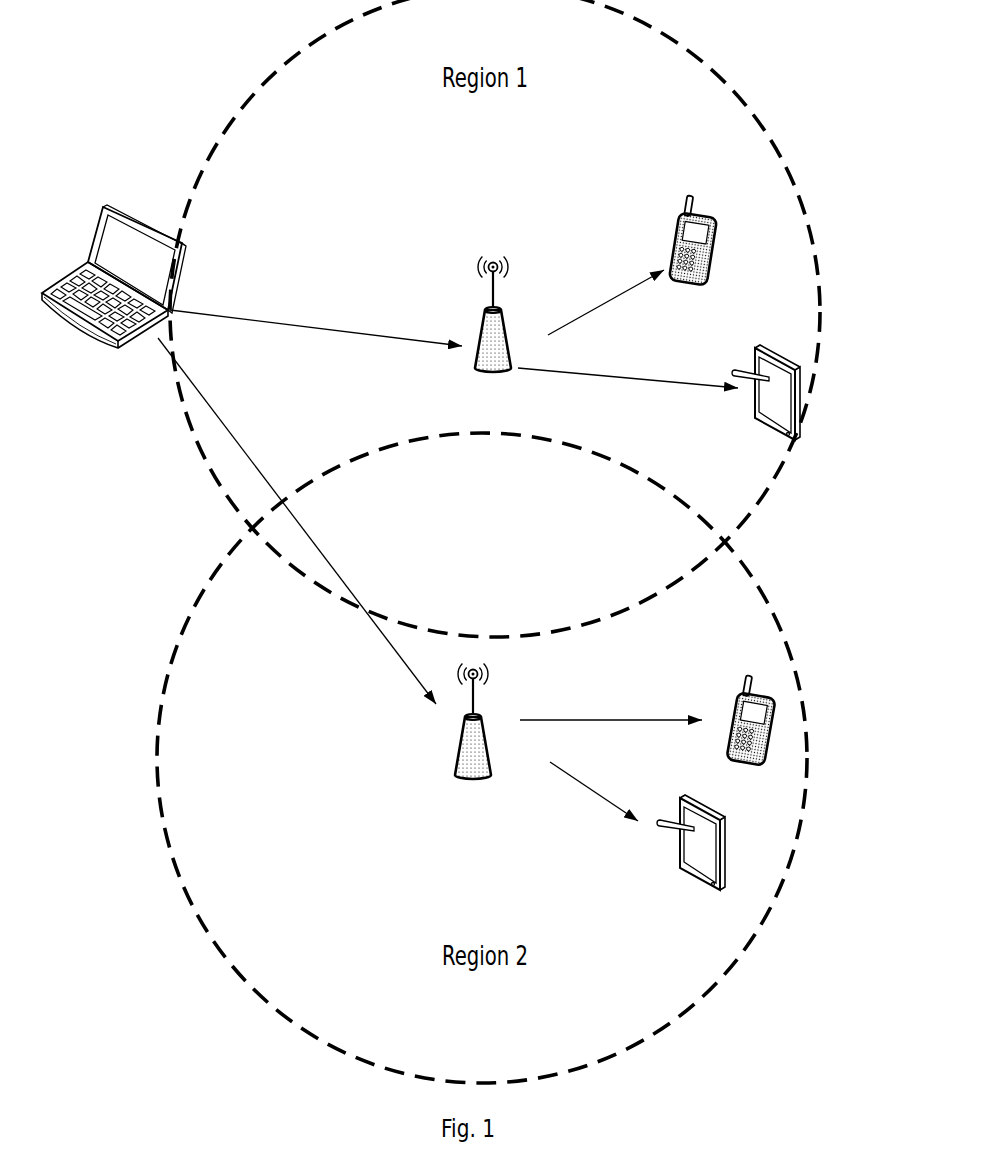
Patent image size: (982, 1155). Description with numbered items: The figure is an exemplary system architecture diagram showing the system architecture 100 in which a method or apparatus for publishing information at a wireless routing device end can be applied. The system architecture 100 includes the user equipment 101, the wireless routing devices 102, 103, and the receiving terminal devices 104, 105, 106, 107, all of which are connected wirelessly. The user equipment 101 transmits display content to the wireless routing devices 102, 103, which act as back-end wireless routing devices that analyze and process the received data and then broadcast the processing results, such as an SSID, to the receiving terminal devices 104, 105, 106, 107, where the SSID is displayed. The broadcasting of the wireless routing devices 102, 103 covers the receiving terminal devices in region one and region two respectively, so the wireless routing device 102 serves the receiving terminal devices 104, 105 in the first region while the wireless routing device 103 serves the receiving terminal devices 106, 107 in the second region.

The system architecture 100 is at (883, 126).
The user equipment 101 is at (114, 292).
The wireless routing device 102 is at (494, 329).
The wireless routing device 103 is at (475, 749).
The receiving terminal device 104 is at (766, 408).
The receiving terminal device 105 is at (694, 256).
The receiving terminal device 106 is at (752, 736).
The receiving terminal device 107 is at (691, 860).